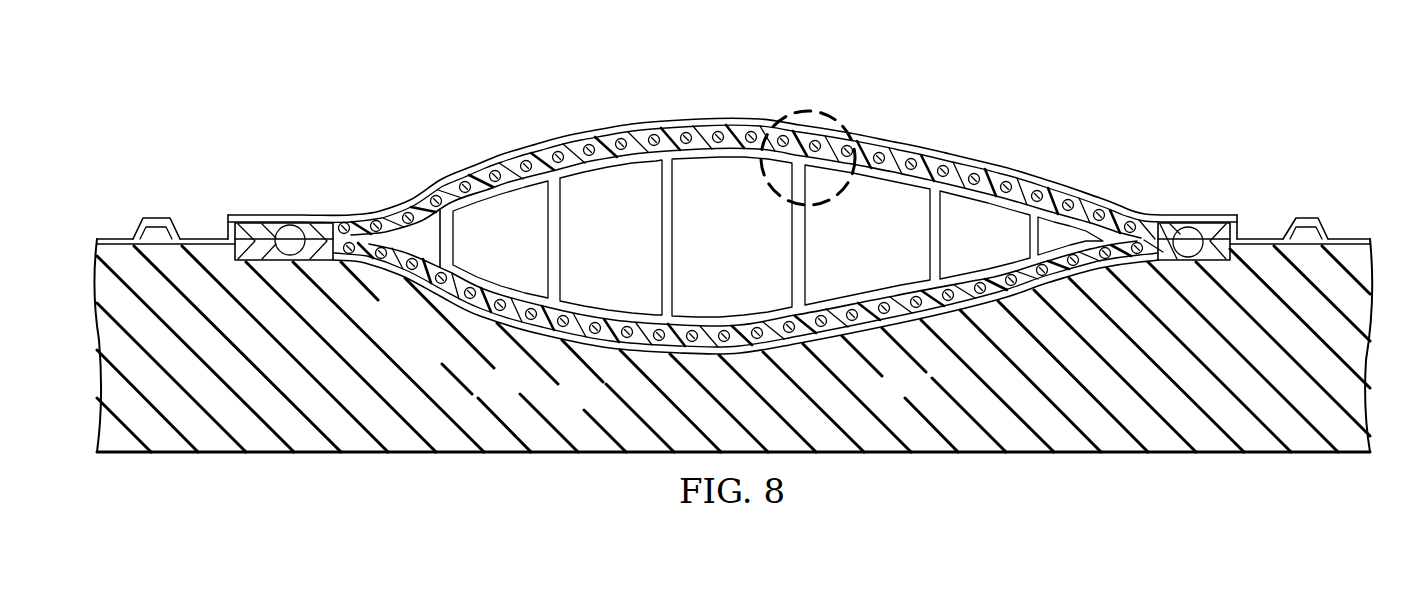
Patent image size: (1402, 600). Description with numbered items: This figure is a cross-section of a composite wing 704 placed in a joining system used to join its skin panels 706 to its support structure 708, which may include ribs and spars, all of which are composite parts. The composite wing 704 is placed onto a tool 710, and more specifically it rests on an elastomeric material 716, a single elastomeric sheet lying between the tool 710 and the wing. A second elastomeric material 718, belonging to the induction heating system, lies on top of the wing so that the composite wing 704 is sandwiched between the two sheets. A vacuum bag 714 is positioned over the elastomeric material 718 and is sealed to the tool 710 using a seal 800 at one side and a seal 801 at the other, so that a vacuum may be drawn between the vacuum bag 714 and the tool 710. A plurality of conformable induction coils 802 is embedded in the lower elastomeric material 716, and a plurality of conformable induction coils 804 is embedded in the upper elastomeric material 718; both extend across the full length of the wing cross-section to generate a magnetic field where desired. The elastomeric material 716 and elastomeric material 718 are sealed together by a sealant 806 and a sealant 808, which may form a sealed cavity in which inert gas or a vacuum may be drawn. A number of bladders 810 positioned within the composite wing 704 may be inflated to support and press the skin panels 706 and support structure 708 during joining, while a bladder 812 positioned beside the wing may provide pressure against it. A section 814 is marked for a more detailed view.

The composite wing 704 is at (920, 330).
The skin panels 706 is at (948, 171).
The support structure 708 is at (814, 277).
The tool 710 is at (213, 452).
The vacuum bag 714 is at (600, 131).
The elastomeric material 716 is at (601, 360).
The elastomeric material 718 is at (500, 158).
The seal 800 is at (163, 231).
The seal 801 is at (1302, 232).
The plurality of conformable induction coils 802 is at (515, 337).
The plurality of conformable induction coils 804 is at (431, 197).
The sealant 806 is at (285, 226).
The sealant 808 is at (1188, 228).
The number of bladders 810 is at (487, 262).
The bladder 812 is at (416, 278).
The section 814 is at (826, 113).